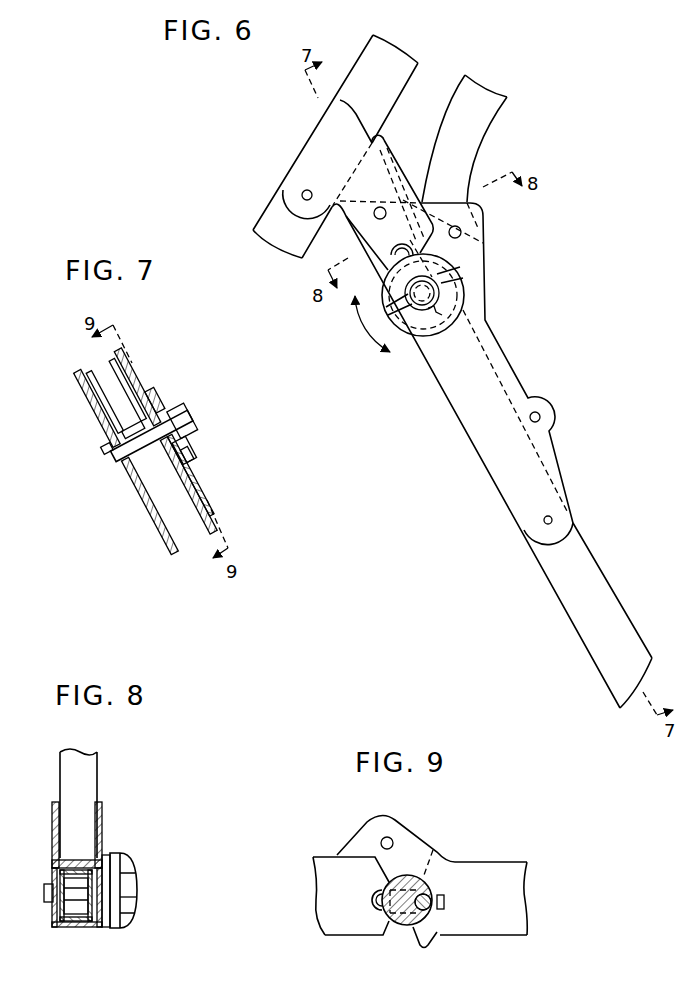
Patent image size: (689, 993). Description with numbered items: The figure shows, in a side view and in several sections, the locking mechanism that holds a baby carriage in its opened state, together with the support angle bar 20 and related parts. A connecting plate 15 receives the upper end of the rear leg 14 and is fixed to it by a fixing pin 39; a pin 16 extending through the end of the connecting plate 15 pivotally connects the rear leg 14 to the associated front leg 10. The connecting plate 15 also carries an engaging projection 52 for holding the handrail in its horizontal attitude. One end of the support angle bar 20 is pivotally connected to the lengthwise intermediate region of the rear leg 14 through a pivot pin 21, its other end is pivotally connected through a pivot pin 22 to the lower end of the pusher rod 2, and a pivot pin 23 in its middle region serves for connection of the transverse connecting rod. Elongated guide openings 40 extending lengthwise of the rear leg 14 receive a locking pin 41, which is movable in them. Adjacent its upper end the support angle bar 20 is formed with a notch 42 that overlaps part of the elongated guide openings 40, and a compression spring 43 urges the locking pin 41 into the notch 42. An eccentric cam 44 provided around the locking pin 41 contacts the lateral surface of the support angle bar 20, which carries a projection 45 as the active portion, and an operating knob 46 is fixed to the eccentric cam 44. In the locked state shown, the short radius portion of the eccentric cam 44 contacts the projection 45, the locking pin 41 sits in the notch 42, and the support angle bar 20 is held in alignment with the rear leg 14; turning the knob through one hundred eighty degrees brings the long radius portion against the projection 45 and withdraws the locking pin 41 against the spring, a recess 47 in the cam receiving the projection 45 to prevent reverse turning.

In FIG. 6, the pusher rod 2 is at (496, 117).
In FIG. 8, the pusher rod 2 is at (92, 772).
In FIG. 6, the front leg 10 is at (272, 221).
In FIG. 6, the rear leg 14 is at (567, 597).
In FIG. 7, the rear leg 14 is at (188, 545).
In FIG. 8, the rear leg 14 is at (77, 928).
In FIG. 6, the connecting plate 15 is at (310, 157).
In FIG. 7, the connecting plate 15 is at (80, 400).
In FIG. 8, the connecting plate 15 is at (57, 927).
In FIG. 9, the connecting plate 15 is at (338, 930).
In FIG. 6, the pin 16 is at (303, 193).
In FIG. 6, the support angle bar 20 is at (483, 430).
In FIG. 7, the support angle bar 20 is at (193, 490).
In FIG. 8, the support angle bar 20 is at (100, 822).
In FIG. 9, the support angle bar 20 is at (493, 923).
In FIG. 6, the pivot pin 21 is at (545, 522).
In FIG. 6, the pivot pin 22 is at (462, 232).
In FIG. 9, the pivot pin 22 is at (393, 840).
In FIG. 6, the pivot pin 23 is at (540, 417).
In FIG. 6, the fixing pin 39 is at (376, 218).
In FIG. 6, the elongated guide openings 40 is at (380, 262).
In FIG. 7, the elongated guide openings 40 is at (135, 390).
In FIG. 9, the elongated guide openings 40 is at (372, 898).
In FIG. 6, the locking pin 41 is at (440, 291).
In FIG. 7, the locking pin 41 is at (123, 457).
In FIG. 8, the locking pin 41 is at (68, 888).
In FIG. 9, the locking pin 41 is at (437, 896).
In FIG. 9, the notch 42 is at (428, 868).
In FIG. 7, the compression spring 43 is at (100, 442).
In FIG. 6, the eccentric cam 44 is at (455, 260).
In FIG. 7, the eccentric cam 44 is at (165, 406).
In FIG. 8, the eccentric cam 44 is at (107, 922).
In FIG. 9, the eccentric cam 44 is at (400, 922).
In FIG. 6, the projection 45 is at (402, 318).
In FIG. 7, the projection 45 is at (190, 457).
In FIG. 9, the projection 45 is at (443, 908).
In FIG. 6, the operating knob 46 is at (455, 305).
In FIG. 7, the operating knob 46 is at (185, 453).
In FIG. 8, the operating knob 46 is at (130, 867).
In FIG. 7, the recess 47 is at (157, 398).
In FIG. 8, the recess 47 is at (130, 897).
In FIG. 9, the recess 47 is at (370, 910).
In FIG. 6, the engaging projection 52 is at (382, 138).